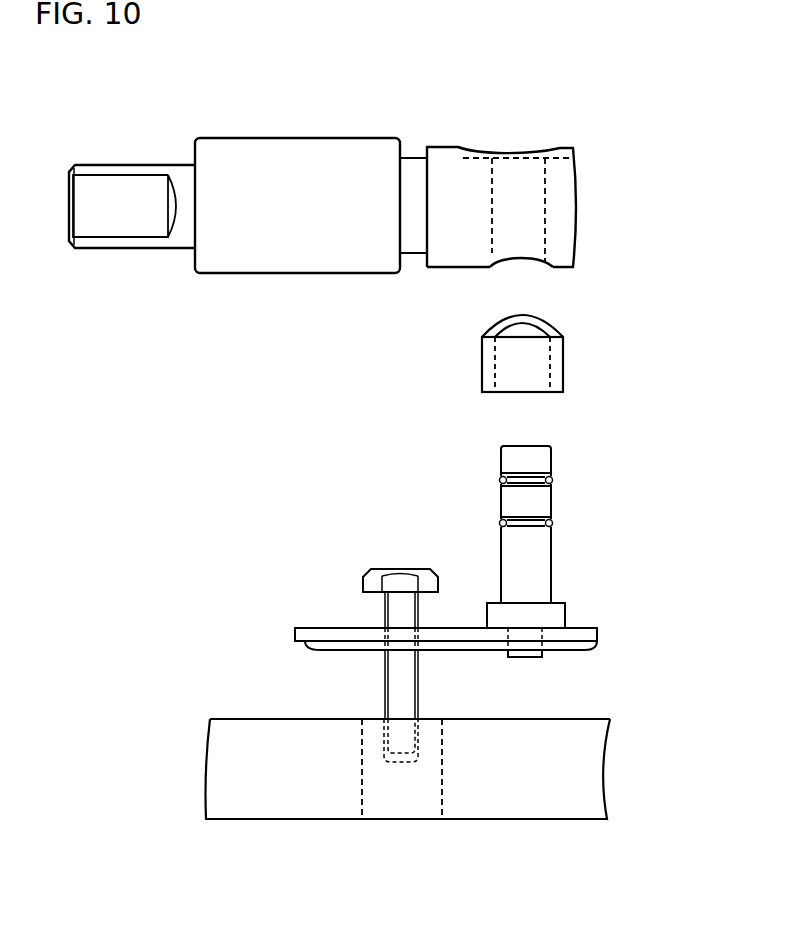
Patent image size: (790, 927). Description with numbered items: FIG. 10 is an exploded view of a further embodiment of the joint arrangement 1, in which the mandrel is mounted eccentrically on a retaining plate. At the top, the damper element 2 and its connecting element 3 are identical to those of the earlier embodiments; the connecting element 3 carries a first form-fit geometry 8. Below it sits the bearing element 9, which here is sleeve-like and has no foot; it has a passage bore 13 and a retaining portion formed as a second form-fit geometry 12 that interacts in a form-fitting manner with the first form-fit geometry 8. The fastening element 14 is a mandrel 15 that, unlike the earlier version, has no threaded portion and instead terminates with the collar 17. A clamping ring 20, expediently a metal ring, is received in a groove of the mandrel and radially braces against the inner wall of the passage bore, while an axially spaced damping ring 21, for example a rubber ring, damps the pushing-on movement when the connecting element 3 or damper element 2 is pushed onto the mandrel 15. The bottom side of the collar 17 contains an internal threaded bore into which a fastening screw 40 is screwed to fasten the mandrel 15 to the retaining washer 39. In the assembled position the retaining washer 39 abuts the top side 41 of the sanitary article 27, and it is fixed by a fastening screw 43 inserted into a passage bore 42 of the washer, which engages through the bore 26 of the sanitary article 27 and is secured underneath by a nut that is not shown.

The joint arrangement 1 is at (655, 160).
The damper element 2 is at (290, 130).
The connecting element 3 is at (460, 138).
The first form-fit geometry 8 is at (490, 272).
The bearing element 9 is at (580, 365).
The second form-fit geometry 12 is at (560, 318).
The passage bore 13 is at (550, 362).
The fastening element 14 is at (558, 560).
The mandrel 15 is at (553, 507).
The collar 17 is at (565, 615).
The clamping ring 20 is at (553, 482).
The damping ring 21 is at (500, 523).
The bore 26 is at (443, 770).
The sanitary article 27 is at (582, 780).
The retaining washer 39 is at (315, 630).
The fastening screw 40 is at (533, 657).
The top side 41 is at (588, 718).
The passage bore 42 is at (380, 630).
The fastening screw 43 is at (420, 692).